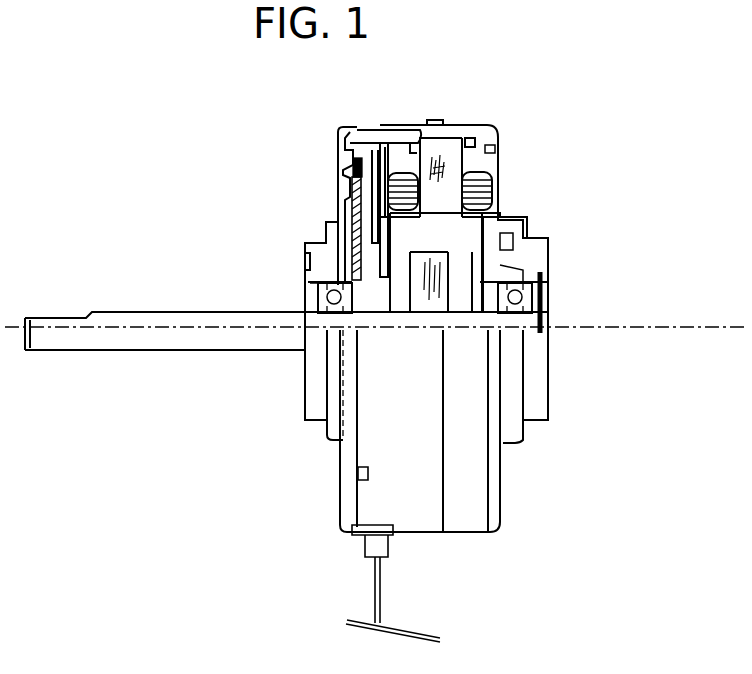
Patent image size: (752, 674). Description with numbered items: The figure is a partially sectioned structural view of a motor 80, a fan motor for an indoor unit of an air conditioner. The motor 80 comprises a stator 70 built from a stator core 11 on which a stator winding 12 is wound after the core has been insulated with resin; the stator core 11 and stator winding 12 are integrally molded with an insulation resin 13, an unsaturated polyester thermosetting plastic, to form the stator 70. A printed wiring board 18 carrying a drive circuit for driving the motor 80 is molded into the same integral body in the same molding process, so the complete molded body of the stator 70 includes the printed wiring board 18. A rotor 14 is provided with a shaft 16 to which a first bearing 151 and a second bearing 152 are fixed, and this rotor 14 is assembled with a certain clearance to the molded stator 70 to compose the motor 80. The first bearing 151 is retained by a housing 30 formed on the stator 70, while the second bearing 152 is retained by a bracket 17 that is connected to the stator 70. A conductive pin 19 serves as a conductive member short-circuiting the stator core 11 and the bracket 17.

The stator core 11 is at (452, 190).
The stator winding 12 is at (545, 305).
The insulation resin 13 is at (483, 132).
The rotor 14 is at (457, 228).
The shaft 16 is at (113, 342).
The bracket 17 is at (337, 142).
The printed wiring board 18 is at (349, 210).
The conductive pin 19 is at (382, 138).
The housing 30 is at (530, 283).
The stator 70 is at (483, 163).
The motor 80 is at (465, 485).
The first bearing 151 is at (528, 327).
The second bearing 152 is at (302, 311).